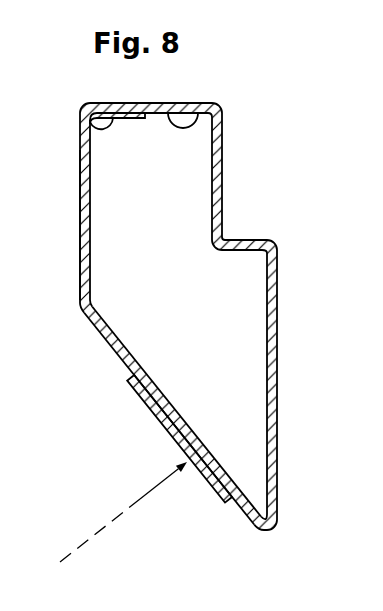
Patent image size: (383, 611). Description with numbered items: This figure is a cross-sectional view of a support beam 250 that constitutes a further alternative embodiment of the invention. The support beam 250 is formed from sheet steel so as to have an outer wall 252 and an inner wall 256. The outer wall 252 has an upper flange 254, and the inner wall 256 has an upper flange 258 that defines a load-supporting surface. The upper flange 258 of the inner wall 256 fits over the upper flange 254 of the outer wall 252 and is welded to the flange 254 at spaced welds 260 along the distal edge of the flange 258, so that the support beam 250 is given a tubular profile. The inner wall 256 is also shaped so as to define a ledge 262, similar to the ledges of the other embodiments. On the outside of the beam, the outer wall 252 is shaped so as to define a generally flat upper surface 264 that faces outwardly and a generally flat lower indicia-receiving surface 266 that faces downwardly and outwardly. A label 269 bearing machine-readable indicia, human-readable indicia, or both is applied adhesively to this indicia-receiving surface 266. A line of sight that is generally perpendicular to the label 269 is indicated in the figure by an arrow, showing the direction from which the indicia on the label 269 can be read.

The support beam 250 is at (238, 150).
The outer wall 252 is at (84, 233).
The upper flange 254 is at (86, 136).
The inner wall 256 is at (274, 302).
The upper flange 258 is at (202, 105).
The spaced welds 260 is at (97, 106).
The ledge 262 is at (227, 235).
The upper surface 264 is at (84, 196).
The indicia-receiving surface 266 is at (117, 356).
The label 269 is at (150, 412).